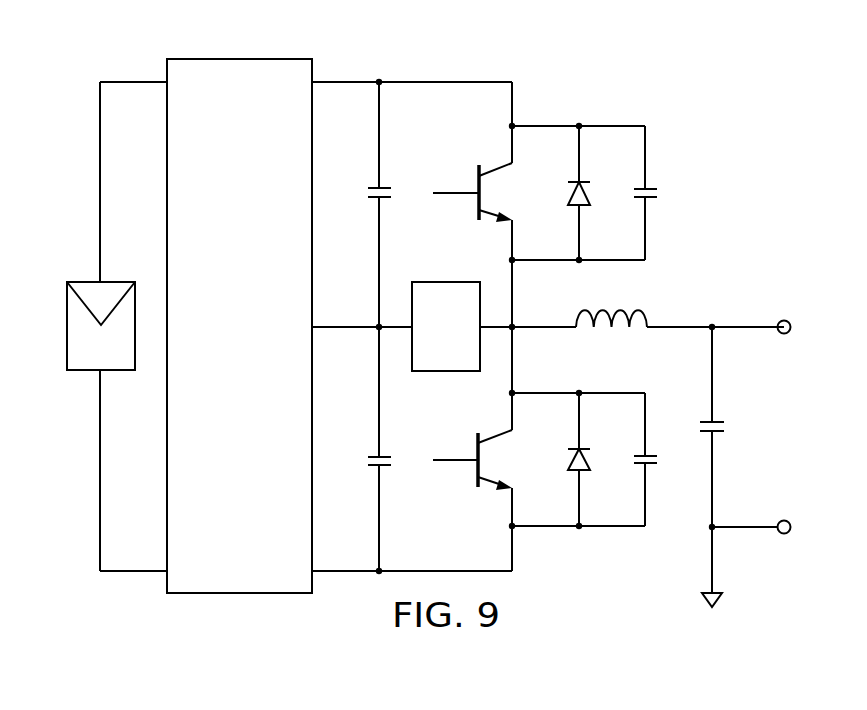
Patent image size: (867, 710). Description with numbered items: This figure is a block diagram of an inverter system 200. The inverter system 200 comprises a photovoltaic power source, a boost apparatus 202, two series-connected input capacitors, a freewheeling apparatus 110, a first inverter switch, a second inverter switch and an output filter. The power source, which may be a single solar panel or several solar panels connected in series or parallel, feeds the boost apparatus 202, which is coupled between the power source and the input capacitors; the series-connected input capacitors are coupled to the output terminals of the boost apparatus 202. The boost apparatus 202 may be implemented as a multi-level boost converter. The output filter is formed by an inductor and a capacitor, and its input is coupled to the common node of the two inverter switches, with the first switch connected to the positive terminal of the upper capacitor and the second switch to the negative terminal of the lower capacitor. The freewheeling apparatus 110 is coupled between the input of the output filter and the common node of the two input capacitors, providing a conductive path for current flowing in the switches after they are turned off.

The inverter system 200 is at (688, 63).
The boost apparatus 202 is at (219, 372).
The freewheeling apparatus 110 is at (425, 340).